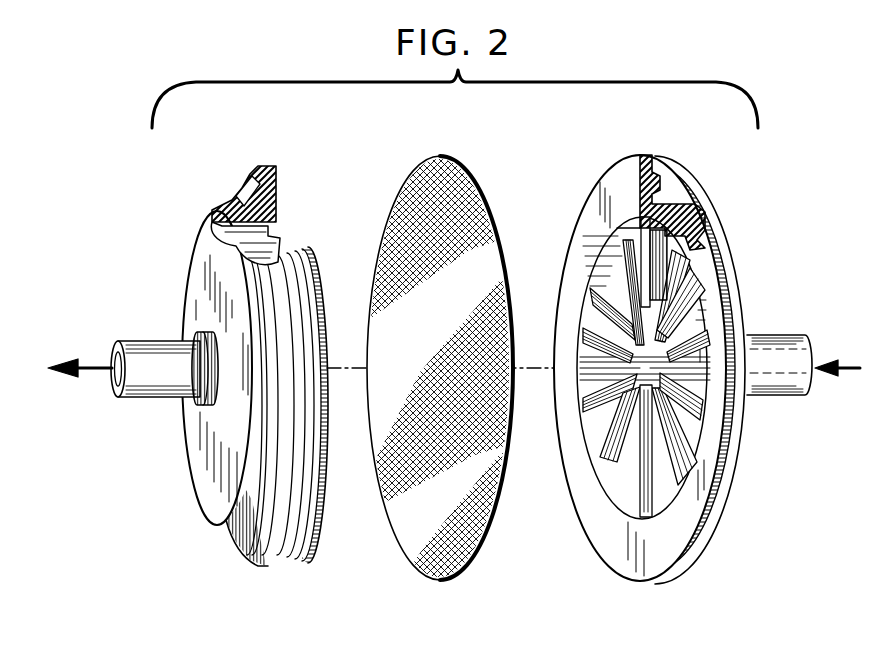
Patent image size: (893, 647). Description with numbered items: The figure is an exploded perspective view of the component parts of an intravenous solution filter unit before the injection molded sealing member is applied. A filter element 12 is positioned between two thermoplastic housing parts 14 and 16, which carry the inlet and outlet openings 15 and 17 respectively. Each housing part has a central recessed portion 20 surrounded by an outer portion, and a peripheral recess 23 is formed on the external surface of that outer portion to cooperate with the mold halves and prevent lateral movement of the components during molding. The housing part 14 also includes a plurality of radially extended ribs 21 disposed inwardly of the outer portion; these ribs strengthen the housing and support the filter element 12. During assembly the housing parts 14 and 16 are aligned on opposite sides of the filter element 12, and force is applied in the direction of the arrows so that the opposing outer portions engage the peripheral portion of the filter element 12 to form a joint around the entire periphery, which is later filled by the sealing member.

The filter element 12 is at (400, 180).
The housing part 14 is at (691, 348).
The inlet opening 15 is at (777, 393).
The housing part 16 is at (205, 391).
The outlet opening 17 is at (130, 393).
The central recessed portion 20 is at (192, 278).
The radially extended ribs 21 is at (607, 467).
The peripheral recess 23 is at (233, 203).